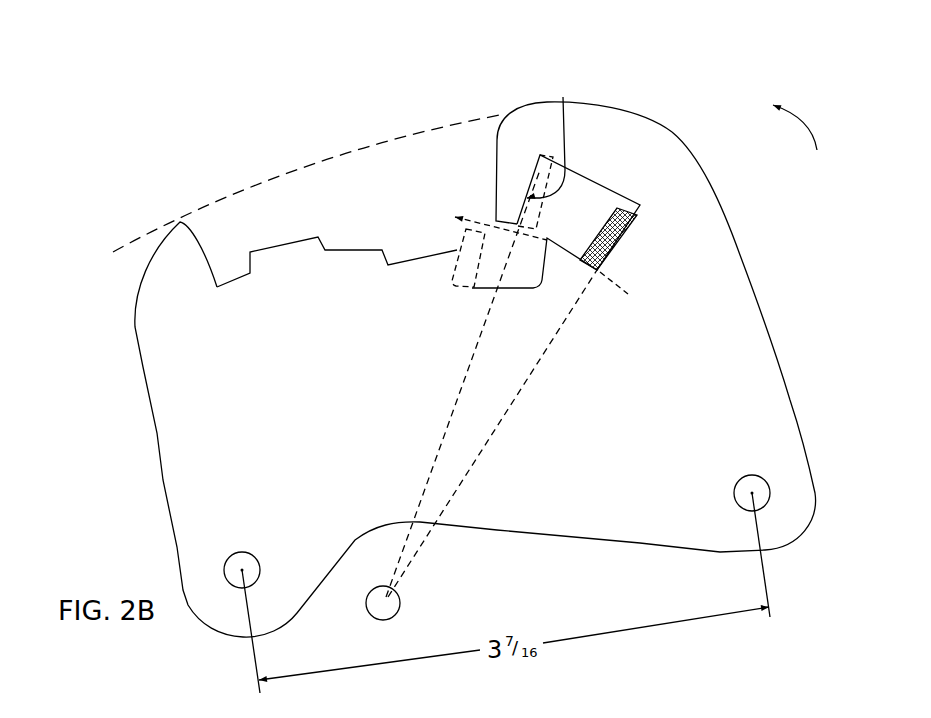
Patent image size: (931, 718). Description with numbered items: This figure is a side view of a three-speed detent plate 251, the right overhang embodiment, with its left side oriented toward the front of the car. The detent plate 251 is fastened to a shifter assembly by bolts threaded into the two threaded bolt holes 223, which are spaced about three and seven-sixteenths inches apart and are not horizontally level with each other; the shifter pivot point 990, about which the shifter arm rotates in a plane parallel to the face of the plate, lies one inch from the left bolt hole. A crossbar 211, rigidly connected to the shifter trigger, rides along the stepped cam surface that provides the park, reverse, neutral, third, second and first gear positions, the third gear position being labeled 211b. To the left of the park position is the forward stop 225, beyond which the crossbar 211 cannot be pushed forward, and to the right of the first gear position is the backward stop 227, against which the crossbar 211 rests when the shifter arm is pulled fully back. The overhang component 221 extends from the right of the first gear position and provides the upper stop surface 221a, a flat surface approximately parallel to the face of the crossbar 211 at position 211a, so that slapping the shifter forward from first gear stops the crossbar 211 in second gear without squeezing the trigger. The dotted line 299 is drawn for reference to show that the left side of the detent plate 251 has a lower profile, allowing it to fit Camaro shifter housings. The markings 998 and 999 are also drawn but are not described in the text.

The detent plate 251 is at (476, 384).
The overhang component 221 is at (584, 127).
The upper stop surface 221a is at (554, 124).
The forward stop 225 is at (331, 316).
The crossbar 211 is at (549, 220).
The backward stop 227 is at (634, 166).
The crossbar position 211a is at (494, 181).
The third gear position 211b is at (465, 232).
The dotted line 299 is at (296, 183).
The threaded bolt holes 223 is at (497, 510).
The shifter pivot point 990 is at (388, 598).
The reference point 998 is at (627, 318).
The rotation direction 999 is at (777, 135).